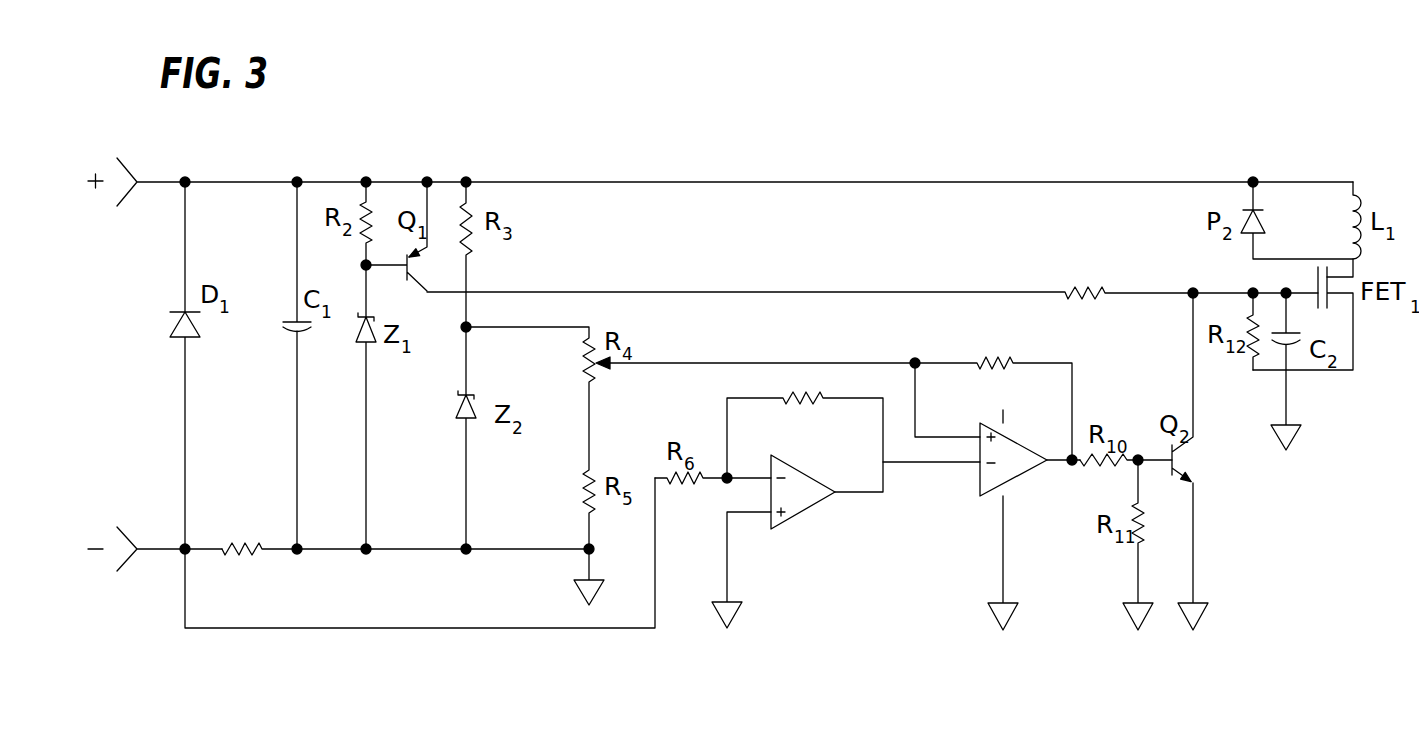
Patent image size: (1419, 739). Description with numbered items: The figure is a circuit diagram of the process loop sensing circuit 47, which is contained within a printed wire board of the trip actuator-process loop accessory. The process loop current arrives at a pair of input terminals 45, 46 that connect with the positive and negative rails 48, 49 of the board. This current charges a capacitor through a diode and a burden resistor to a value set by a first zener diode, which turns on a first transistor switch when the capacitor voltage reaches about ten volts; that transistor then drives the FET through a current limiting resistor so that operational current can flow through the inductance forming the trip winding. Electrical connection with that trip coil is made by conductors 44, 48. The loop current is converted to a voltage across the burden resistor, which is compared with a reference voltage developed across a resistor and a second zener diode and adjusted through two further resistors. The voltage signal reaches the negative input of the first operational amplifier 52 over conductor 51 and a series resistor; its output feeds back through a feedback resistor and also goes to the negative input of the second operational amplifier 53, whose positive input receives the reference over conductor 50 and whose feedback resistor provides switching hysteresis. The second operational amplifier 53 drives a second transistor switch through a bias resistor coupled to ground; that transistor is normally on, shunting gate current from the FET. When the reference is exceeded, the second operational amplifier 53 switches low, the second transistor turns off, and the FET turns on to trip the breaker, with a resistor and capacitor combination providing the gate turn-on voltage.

The conductor 44 is at (742, 292).
The input terminal 45 is at (190, 176).
The input terminal 46 is at (190, 554).
The process loop sensing circuit 47 is at (538, 692).
The positive rail 48 is at (752, 182).
The negative rail 49 is at (328, 552).
The conductor 50 is at (727, 363).
The conductor 51 is at (363, 628).
The first operational amplifier 52 is at (797, 471).
The second operational amplifier 53 is at (1012, 443).